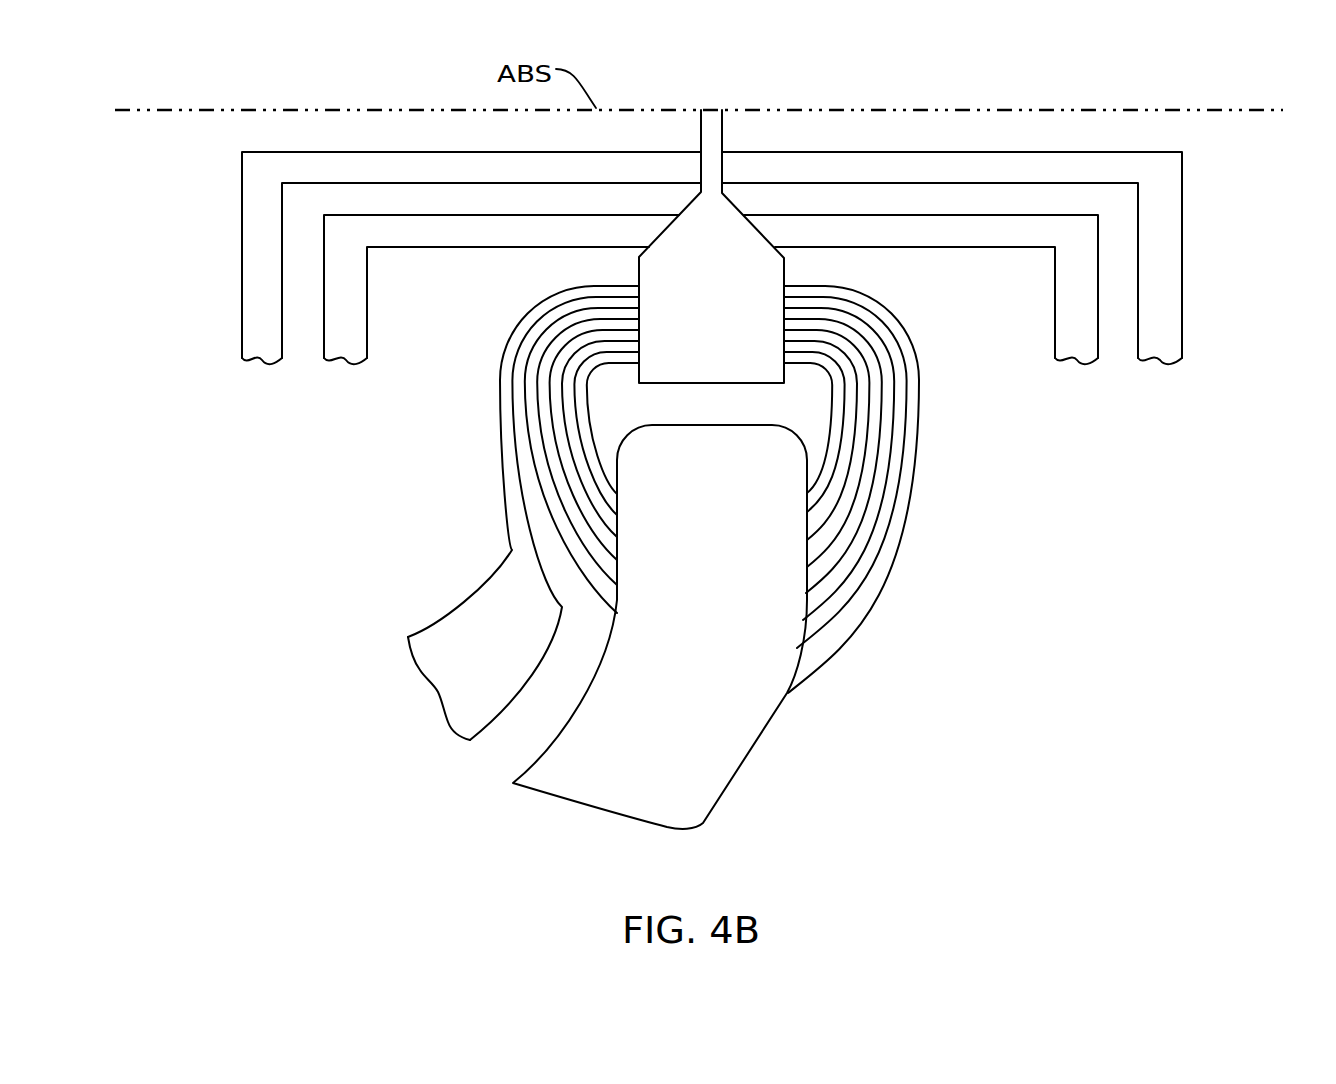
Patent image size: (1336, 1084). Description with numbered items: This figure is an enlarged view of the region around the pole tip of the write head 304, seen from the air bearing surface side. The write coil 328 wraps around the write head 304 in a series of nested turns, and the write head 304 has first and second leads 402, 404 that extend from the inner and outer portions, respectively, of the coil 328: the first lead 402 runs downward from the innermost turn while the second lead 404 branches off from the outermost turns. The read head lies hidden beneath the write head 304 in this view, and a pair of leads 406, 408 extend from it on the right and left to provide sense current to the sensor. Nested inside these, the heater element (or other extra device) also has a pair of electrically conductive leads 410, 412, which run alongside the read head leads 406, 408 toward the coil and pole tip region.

The write head 304 is at (801, 273).
The write coil 328 is at (917, 475).
The first lead 402 is at (765, 519).
The second lead 404 is at (520, 641).
The read head lead 406 is at (1182, 168).
The read head lead 408 is at (242, 193).
The heater element lead 410 is at (1055, 279).
The heater element lead 412 is at (367, 272).